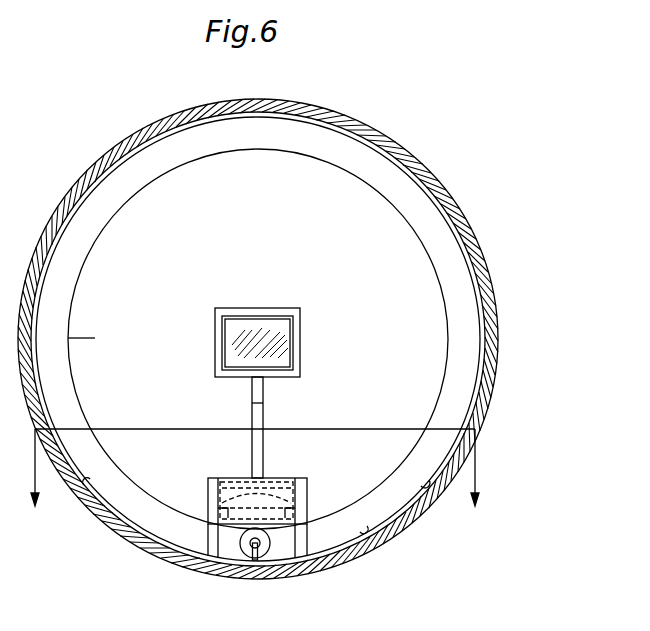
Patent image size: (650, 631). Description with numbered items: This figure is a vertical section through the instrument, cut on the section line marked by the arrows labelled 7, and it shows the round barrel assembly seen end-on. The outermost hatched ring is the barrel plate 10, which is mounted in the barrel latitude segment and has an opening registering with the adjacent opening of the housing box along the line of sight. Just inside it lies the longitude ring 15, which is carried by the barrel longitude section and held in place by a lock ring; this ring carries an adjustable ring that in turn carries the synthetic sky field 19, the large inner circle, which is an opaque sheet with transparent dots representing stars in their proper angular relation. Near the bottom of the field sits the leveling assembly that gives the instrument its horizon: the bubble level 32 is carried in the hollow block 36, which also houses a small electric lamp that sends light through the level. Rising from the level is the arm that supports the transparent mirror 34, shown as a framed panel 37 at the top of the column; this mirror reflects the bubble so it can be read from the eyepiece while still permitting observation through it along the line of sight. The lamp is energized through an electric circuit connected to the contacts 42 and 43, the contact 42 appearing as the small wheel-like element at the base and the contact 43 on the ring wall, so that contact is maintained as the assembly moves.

The barrel plate 10 is at (489, 352).
The longitude ring 15 is at (465, 399).
The synthetic sky field 19 is at (437, 283).
The contact 43 is at (367, 540).
The section line 7- 7 is at (253, 484).
The display panel 37 is at (287, 356).
The transparent mirror 34 is at (255, 418).
The bubble level 32 is at (300, 490).
The hollow block 36 is at (297, 535).
The contact 42 is at (247, 551).